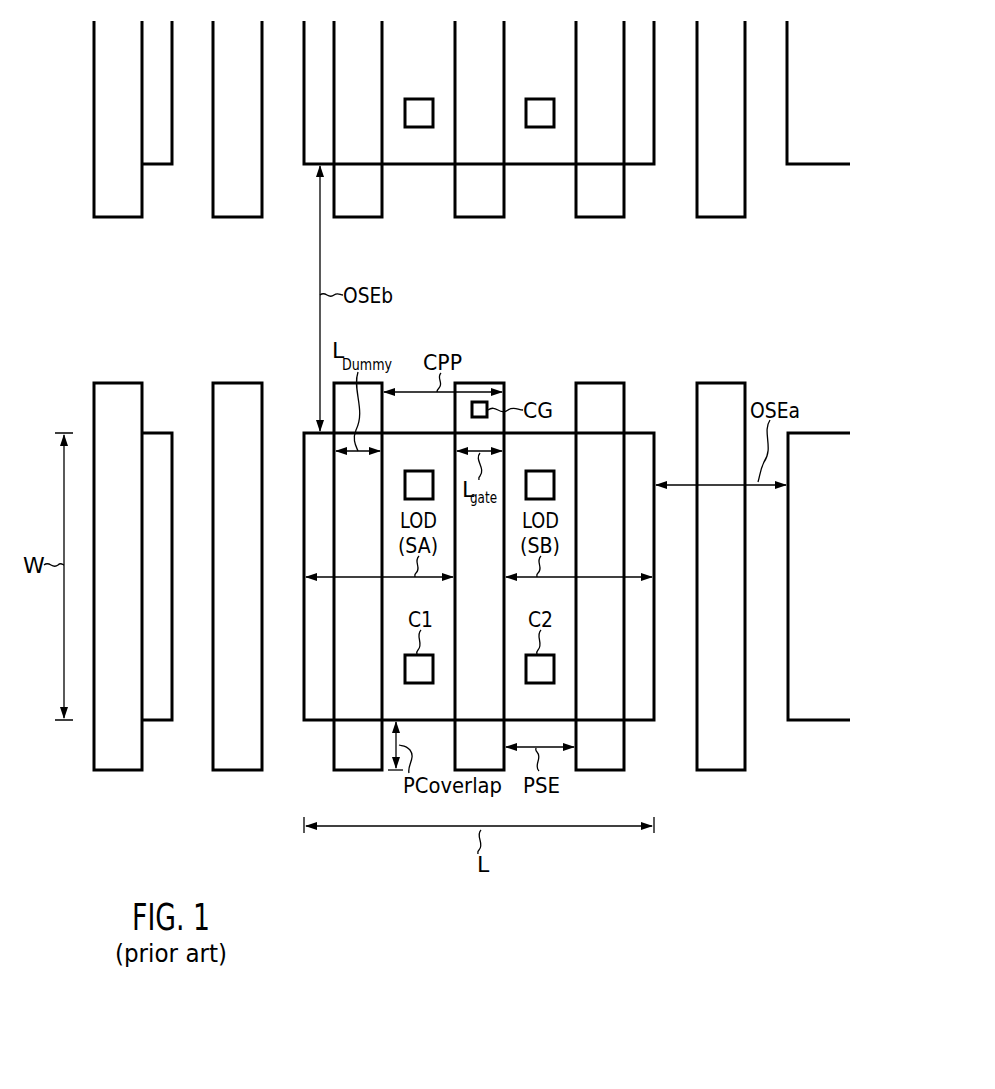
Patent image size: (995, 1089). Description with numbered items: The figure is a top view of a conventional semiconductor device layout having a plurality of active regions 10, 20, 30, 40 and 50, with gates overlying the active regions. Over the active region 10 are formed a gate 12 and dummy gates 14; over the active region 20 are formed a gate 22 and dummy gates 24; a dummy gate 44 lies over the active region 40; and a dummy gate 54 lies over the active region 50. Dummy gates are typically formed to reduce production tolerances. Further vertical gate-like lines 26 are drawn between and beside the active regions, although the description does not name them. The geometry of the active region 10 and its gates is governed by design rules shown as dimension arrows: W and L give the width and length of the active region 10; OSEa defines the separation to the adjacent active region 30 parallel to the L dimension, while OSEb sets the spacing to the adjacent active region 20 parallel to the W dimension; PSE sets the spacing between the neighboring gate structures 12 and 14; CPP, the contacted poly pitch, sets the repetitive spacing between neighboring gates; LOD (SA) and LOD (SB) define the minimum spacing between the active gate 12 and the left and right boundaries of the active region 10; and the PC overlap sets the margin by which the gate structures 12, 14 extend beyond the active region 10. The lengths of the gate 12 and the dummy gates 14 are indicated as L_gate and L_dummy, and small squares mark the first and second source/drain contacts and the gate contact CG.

The active region 10 is at (641, 433).
The gate 12 is at (492, 758).
The dummy gates 14 is at (372, 758).
The active region 20 is at (655, 150).
The gate 22 is at (491, 203).
The dummy gates 24 is at (371, 203).
The poly line 26 is at (250, 203).
The active region 30 is at (810, 720).
The active region 40 is at (159, 166).
The dummy gate 44 is at (130, 203).
The active region 50 is at (158, 433).
The dummy gate 54 is at (130, 758).